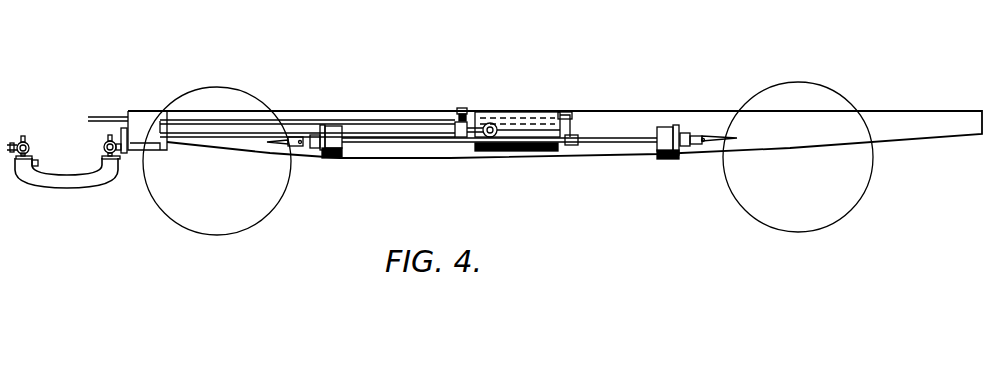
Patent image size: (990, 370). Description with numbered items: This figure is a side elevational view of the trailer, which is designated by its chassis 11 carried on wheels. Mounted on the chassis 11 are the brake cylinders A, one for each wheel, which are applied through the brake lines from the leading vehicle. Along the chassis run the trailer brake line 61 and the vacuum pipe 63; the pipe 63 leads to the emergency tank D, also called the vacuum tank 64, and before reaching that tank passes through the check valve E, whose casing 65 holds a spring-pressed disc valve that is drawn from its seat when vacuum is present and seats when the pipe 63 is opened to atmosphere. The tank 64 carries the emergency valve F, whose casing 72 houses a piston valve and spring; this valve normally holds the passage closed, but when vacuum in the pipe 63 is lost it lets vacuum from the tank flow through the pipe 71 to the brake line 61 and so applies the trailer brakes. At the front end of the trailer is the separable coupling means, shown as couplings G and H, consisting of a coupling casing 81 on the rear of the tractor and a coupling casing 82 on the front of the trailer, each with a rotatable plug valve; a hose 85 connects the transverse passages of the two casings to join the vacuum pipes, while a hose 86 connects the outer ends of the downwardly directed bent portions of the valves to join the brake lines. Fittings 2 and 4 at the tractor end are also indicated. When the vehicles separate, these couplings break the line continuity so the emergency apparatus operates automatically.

The chassis 11 is at (729, 112).
The brake line 61 is at (244, 119).
The pipe 63 is at (231, 133).
The vacuum tank 64 is at (552, 150).
The casing 65 is at (503, 147).
The pipe 71 is at (464, 110).
The casing 72 is at (457, 128).
The coupling casing 81 is at (18, 142).
The coupling casing 82 is at (124, 112).
The hose 85 is at (50, 158).
The hose 86 is at (40, 184).
The pipe 2 is at (14, 143).
The pipe fitting 4 is at (11, 146).
The brake cylinder A is at (333, 151).
The emergency tank D is at (537, 117).
The check valve E is at (494, 122).
The emergency valve F is at (452, 123).
The coupling G is at (30, 142).
The coupling H is at (114, 138).